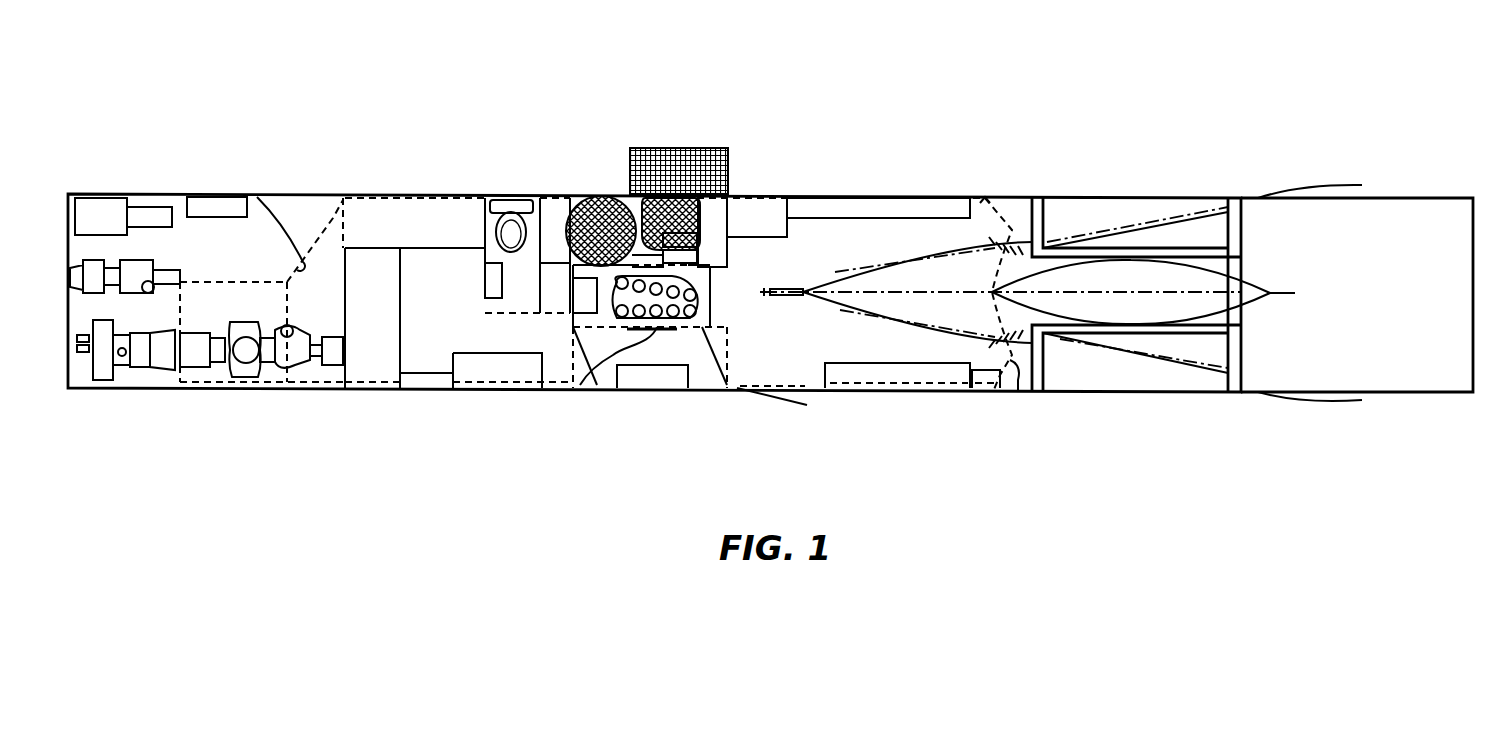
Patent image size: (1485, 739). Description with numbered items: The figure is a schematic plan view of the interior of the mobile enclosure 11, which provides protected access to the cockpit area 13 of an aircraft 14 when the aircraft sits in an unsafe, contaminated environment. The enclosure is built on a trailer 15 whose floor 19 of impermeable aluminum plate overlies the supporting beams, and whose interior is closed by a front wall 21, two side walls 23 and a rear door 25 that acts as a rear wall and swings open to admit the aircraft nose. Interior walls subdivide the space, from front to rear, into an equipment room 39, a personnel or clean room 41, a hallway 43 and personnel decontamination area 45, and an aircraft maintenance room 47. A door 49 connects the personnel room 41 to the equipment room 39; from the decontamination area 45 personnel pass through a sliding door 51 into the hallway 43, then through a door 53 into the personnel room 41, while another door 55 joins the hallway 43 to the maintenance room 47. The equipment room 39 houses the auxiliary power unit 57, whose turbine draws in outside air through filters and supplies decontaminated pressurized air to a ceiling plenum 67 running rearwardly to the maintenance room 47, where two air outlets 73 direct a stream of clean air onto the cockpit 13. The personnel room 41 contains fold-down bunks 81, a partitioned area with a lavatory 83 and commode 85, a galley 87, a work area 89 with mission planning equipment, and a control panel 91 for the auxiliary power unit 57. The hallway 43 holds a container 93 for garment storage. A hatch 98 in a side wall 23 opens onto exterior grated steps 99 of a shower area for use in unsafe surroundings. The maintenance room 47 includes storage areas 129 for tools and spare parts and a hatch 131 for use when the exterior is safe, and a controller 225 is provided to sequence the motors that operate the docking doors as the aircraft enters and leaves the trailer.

The mobile enclosure 11 is at (318, 148).
The cockpit area 13 is at (1188, 315).
The aircraft 14 is at (1177, 198).
The trailer 15 is at (432, 194).
The floor 19 is at (420, 343).
The front wall 21 is at (68, 194).
The side walls 23 is at (268, 194).
The rear door 25 is at (1375, 198).
The equipment room 39 is at (188, 231).
The personnel room 41 is at (447, 262).
The hallway 43 is at (697, 390).
The personnel decontamination area 45 is at (700, 272).
The aircraft maintenance room 47 is at (889, 233).
The door 49 is at (308, 194).
The sliding door 51 is at (607, 390).
The door 53 is at (580, 390).
The door 55 is at (727, 390).
The auxiliary power unit 57 is at (195, 388).
The plenum 67 is at (257, 197).
The air outlets 73 is at (1017, 392).
The bunks 81 is at (375, 205).
The lavatory 83 is at (487, 198).
The commode 85 is at (538, 198).
The galley 87 is at (553, 273).
The work area 89 is at (497, 372).
The control panel 91 is at (447, 373).
The container 93 is at (633, 390).
The hatch 98 is at (657, 178).
The grated steps 99 is at (687, 176).
The storage areas 129 is at (822, 198).
The hatch 131 is at (807, 405).
The controller 225 is at (1008, 392).